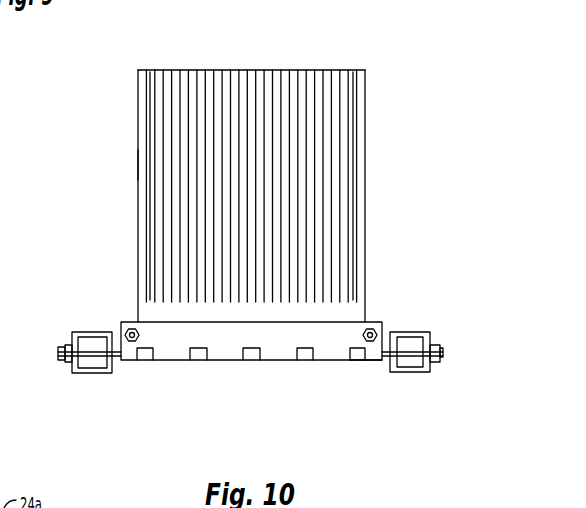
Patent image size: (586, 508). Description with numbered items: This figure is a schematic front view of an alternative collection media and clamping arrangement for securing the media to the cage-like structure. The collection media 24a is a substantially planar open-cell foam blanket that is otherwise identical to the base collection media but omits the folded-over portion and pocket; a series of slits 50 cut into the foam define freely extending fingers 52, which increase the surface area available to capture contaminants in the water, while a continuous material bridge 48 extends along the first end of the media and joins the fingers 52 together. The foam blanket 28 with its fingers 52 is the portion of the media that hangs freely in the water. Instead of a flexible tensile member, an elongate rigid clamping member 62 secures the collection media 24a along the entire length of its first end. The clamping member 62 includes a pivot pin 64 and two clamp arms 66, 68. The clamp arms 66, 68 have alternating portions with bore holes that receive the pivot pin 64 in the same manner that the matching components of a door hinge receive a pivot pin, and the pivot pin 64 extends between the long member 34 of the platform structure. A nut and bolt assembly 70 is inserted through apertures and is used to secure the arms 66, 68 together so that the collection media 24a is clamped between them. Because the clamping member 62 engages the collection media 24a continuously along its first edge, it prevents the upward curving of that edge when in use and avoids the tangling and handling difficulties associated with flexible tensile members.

The heat sink fin block 28 is at (247, 168).
The slits 50 is at (178, 87).
The fingers 52 is at (204, 82).
The collection media 24a is at (142, 165).
The continuous material bridge 48 is at (352, 312).
The clamp arm 66 is at (160, 353).
The clamp arm 68 is at (197, 350).
The nut and bolt assembly 70 is at (122, 325).
The long member 34 is at (98, 377).
The pivot pin 64 is at (87, 348).
The clamping member 62 is at (368, 361).